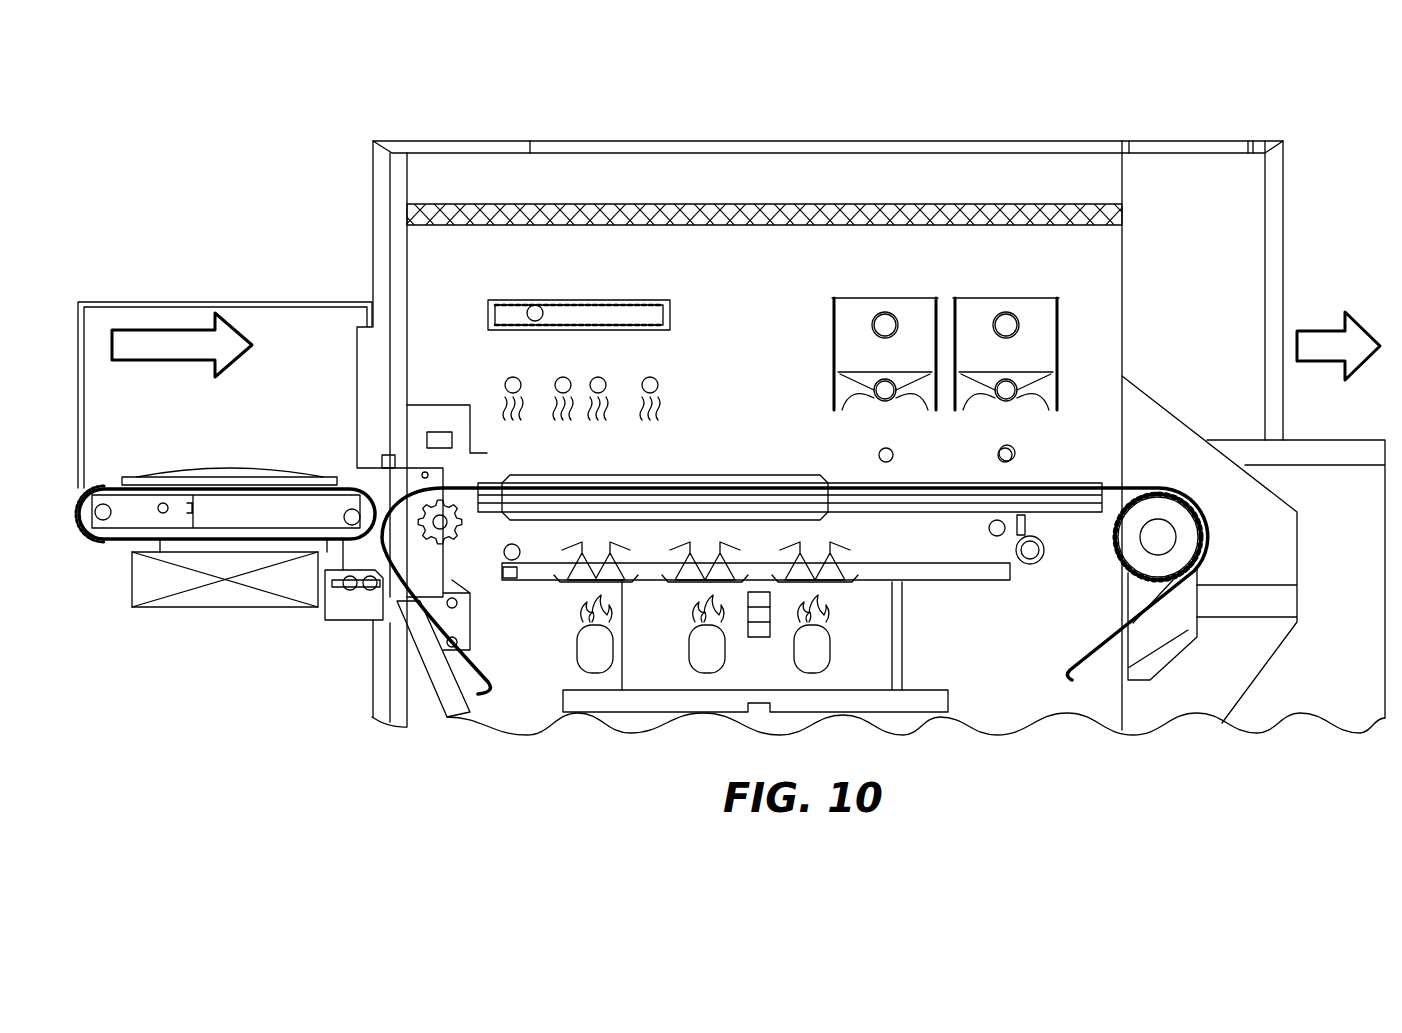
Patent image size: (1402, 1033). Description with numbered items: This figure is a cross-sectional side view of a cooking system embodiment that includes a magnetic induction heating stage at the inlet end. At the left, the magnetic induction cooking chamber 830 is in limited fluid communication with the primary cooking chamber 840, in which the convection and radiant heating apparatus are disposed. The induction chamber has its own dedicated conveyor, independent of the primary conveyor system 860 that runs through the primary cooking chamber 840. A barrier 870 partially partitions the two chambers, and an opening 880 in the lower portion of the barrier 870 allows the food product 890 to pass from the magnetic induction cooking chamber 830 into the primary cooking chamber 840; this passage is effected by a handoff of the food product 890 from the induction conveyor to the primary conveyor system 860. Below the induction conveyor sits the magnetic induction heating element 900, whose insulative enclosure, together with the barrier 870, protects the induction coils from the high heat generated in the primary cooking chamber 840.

The magnetic induction cooking chamber 830 is at (307, 318).
The primary cooking chamber 840 is at (766, 278).
The primary conveyor system 860 is at (78, 527).
The barrier 870 is at (408, 293).
The opening 880 is at (383, 485).
The food product 890 is at (212, 477).
The magnetic induction heating element 900 is at (195, 600).